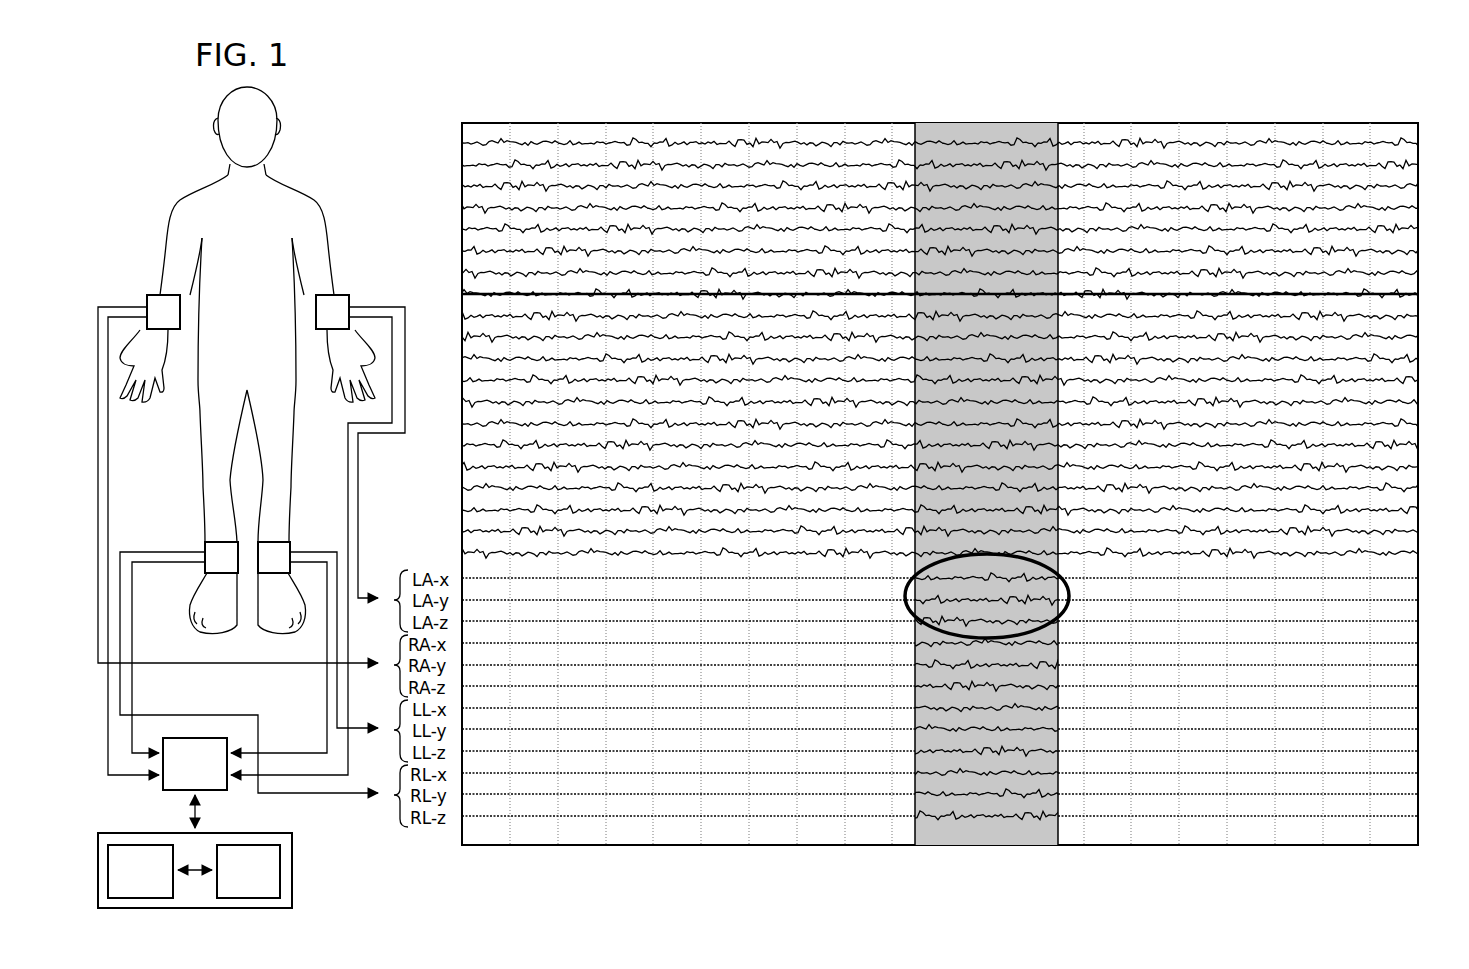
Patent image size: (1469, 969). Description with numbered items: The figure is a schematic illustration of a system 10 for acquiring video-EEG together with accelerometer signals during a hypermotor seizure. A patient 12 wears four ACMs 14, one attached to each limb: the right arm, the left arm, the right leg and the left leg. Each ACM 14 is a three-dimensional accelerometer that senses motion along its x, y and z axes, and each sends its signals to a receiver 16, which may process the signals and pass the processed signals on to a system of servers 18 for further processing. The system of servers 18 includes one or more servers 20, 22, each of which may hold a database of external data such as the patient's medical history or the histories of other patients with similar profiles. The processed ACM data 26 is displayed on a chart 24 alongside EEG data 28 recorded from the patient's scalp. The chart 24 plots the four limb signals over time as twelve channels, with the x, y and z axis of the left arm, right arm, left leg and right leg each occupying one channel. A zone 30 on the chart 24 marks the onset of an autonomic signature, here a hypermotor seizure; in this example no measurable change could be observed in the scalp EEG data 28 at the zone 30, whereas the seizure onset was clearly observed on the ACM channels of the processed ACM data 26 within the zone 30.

The system 10 is at (1343, 93).
The patient 12 is at (187, 183).
The ACM 14 is at (357, 258).
The receiver 16 is at (207, 776).
The system of servers 18 is at (297, 878).
The server 20 is at (152, 882).
The server 22 is at (260, 882).
The chart 24 is at (1240, 119).
The processed ACM data 26 is at (1424, 578).
The EEG data 28 is at (1424, 125).
The zone 30 is at (1058, 851).